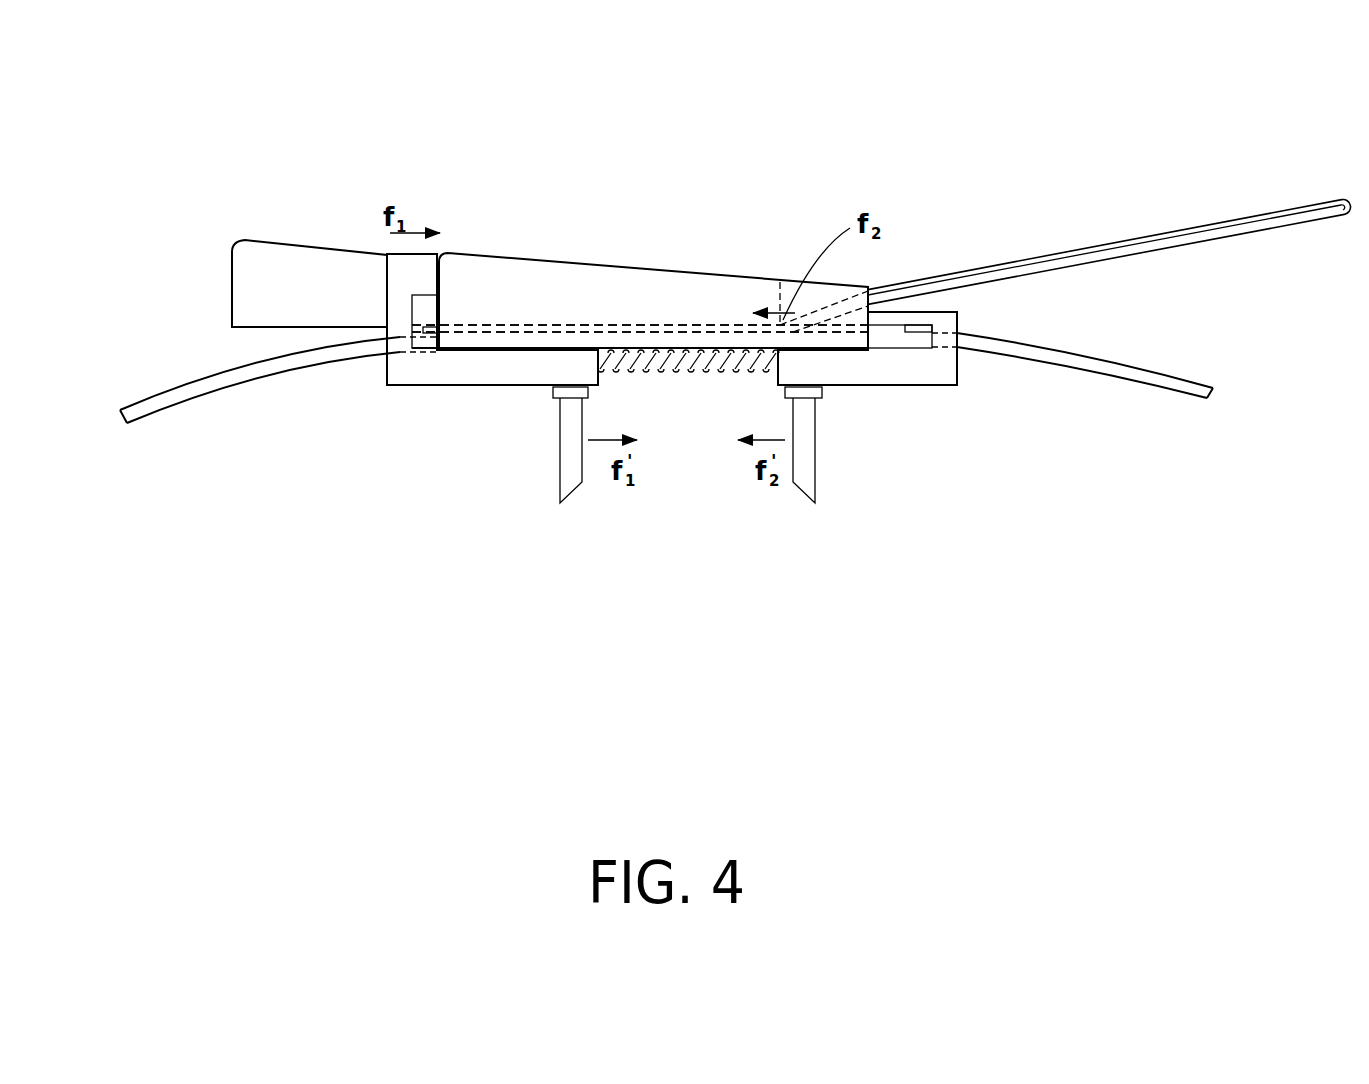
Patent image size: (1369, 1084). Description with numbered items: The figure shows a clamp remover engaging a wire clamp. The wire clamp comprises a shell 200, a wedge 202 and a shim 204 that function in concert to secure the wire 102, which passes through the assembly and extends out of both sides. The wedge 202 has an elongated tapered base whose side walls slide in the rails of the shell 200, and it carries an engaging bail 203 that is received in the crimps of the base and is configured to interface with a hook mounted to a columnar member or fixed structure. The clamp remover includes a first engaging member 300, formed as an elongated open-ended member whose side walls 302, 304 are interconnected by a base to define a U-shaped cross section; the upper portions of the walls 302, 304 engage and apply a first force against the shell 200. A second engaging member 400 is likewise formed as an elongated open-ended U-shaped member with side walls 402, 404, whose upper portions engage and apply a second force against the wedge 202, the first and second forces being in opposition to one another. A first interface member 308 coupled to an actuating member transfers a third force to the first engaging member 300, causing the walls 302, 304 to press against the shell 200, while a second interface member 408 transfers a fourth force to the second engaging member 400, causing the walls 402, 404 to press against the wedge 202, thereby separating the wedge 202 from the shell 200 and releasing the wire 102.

The wire 102 is at (246, 381).
The shell 200 is at (572, 262).
The wedge 202 is at (285, 242).
The engaging bail 203 is at (1093, 246).
The shim 204 is at (483, 333).
The first engaging member 300 is at (322, 416).
The side wall 302 is at (242, 311).
The side wall 304 is at (387, 275).
The first interface member 308 is at (570, 497).
The second engaging member 400 is at (1008, 385).
The side wall 402 is at (1053, 322).
The side wall 404 is at (963, 317).
The second interface member 408 is at (805, 500).